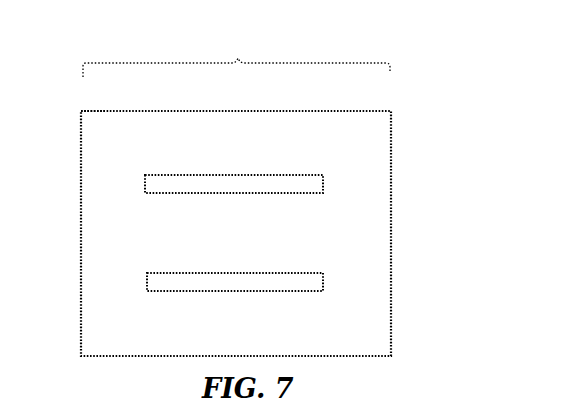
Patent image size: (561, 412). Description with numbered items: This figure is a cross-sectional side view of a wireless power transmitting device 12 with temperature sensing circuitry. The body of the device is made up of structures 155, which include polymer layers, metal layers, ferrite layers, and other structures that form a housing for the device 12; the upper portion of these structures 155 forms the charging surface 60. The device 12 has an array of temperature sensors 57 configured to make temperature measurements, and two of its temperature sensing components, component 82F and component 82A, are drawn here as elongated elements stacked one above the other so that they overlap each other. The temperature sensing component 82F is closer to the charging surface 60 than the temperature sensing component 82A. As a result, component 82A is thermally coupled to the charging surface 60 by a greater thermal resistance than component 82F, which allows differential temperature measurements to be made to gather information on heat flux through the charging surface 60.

The wireless power transmitting device 12 is at (437, 80).
The array of temperature sensors 57 is at (236, 55).
The charging surface 60 is at (102, 111).
The temperature sensing component 82A is at (182, 291).
The temperature sensing component 82F is at (192, 193).
The structures 155 is at (377, 232).